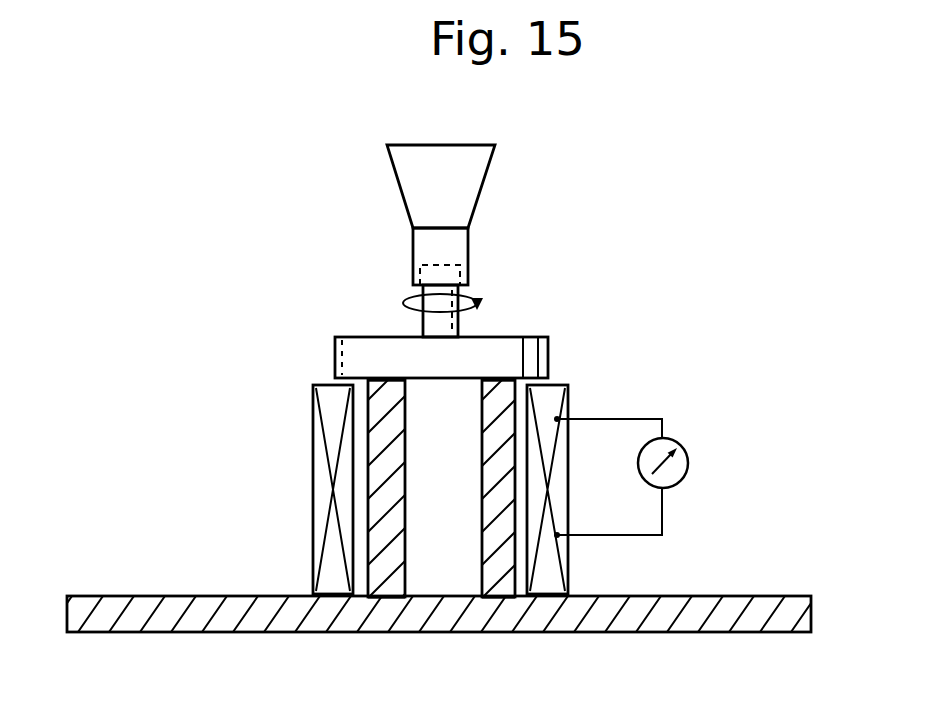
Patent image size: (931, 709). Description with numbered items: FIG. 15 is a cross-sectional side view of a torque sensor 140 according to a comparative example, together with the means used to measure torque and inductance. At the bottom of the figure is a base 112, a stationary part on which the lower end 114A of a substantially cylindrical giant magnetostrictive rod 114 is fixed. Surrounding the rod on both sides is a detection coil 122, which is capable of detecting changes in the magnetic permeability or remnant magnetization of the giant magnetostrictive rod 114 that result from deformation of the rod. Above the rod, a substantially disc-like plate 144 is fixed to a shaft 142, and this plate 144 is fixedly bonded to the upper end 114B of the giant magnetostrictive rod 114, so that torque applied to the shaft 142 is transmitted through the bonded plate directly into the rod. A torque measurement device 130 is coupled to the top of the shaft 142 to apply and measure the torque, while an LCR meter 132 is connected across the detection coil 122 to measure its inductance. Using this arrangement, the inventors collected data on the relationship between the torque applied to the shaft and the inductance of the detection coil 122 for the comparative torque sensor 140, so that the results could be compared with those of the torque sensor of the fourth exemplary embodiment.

The base 112 is at (118, 606).
The giant magnetostrictive rod 114 is at (500, 565).
The lower end 114A is at (386, 605).
The upper end 114B is at (385, 374).
The detection coil 122 is at (332, 408).
The torque measurement device 130 is at (478, 172).
The LCR meter 132 is at (688, 463).
The torque sensor 140 is at (556, 279).
The shaft 142 is at (460, 331).
The plate 144 is at (549, 355).